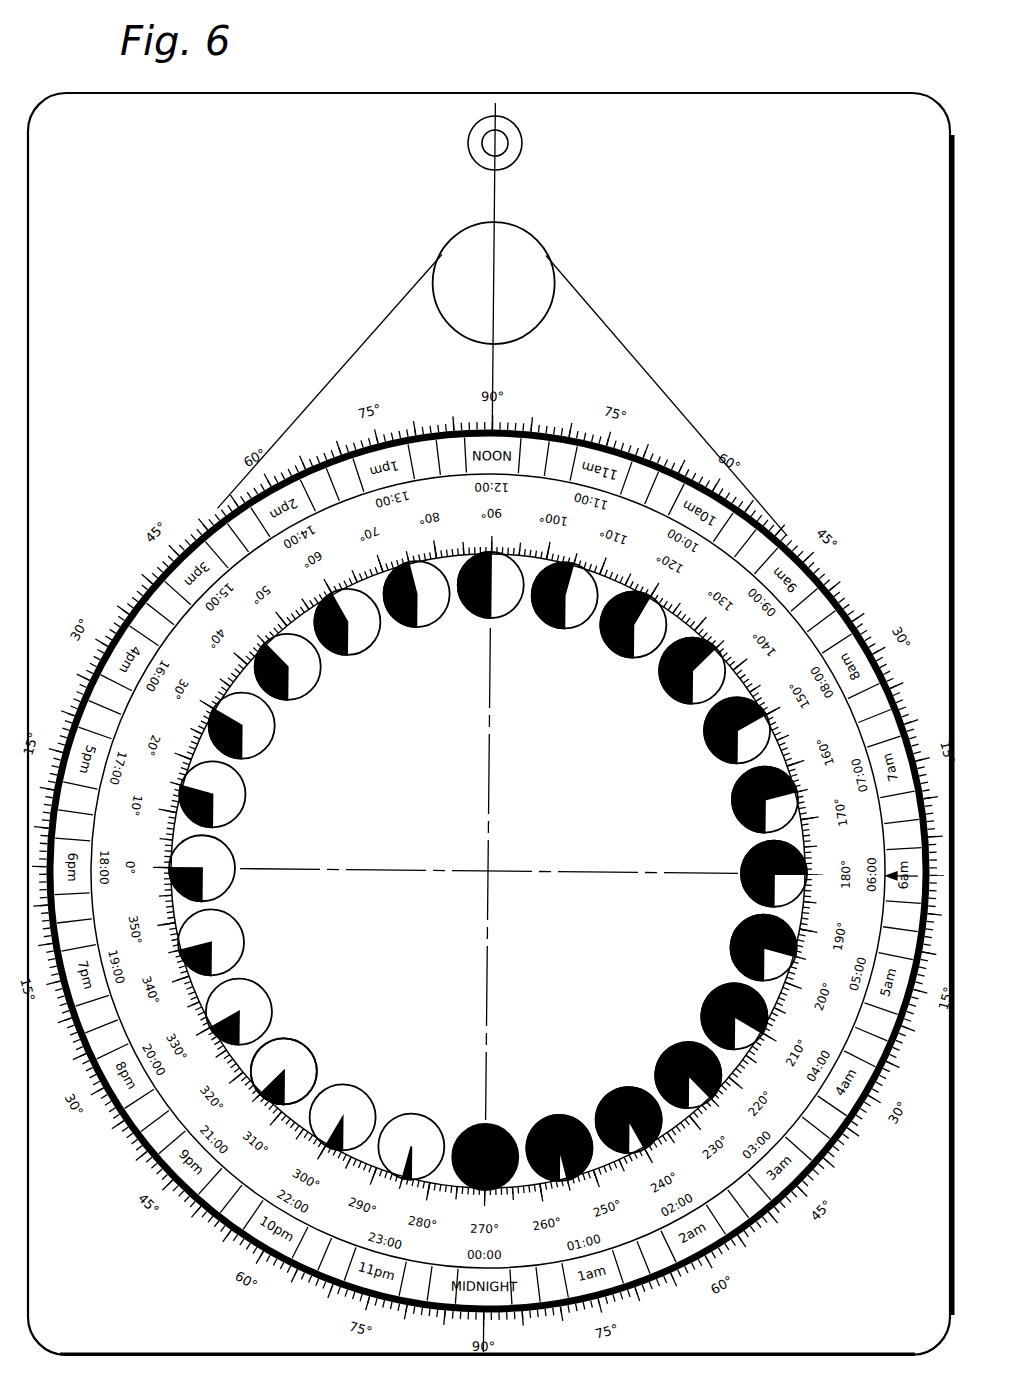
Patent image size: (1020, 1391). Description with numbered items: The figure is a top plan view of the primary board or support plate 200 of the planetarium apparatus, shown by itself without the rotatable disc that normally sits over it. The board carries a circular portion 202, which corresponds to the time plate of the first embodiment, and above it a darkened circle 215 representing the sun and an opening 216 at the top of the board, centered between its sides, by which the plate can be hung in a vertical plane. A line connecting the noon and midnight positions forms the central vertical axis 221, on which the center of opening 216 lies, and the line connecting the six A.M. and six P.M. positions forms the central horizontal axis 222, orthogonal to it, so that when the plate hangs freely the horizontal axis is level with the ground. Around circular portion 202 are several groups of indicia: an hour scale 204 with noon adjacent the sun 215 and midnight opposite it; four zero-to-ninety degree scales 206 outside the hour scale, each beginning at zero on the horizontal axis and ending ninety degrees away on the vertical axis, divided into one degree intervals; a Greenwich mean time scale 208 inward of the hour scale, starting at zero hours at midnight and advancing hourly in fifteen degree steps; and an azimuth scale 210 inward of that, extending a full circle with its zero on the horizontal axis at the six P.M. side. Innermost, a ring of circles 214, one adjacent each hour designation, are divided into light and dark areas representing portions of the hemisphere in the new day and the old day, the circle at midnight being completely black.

The primary board 200 is at (852, 96).
The circular portion 202 is at (66, 822).
The hour scale 204 is at (226, 548).
The 0°-90° scales 206 is at (64, 640).
The Greenwich mean time scale 208 is at (898, 1095).
The azimuth scale 210 is at (752, 749).
The circles 214 is at (312, 1046).
The darkened circle 215 is at (527, 235).
The opening 216 is at (505, 145).
The central vertical axis 221 is at (489, 688).
The central horizontal axis 222 is at (556, 870).